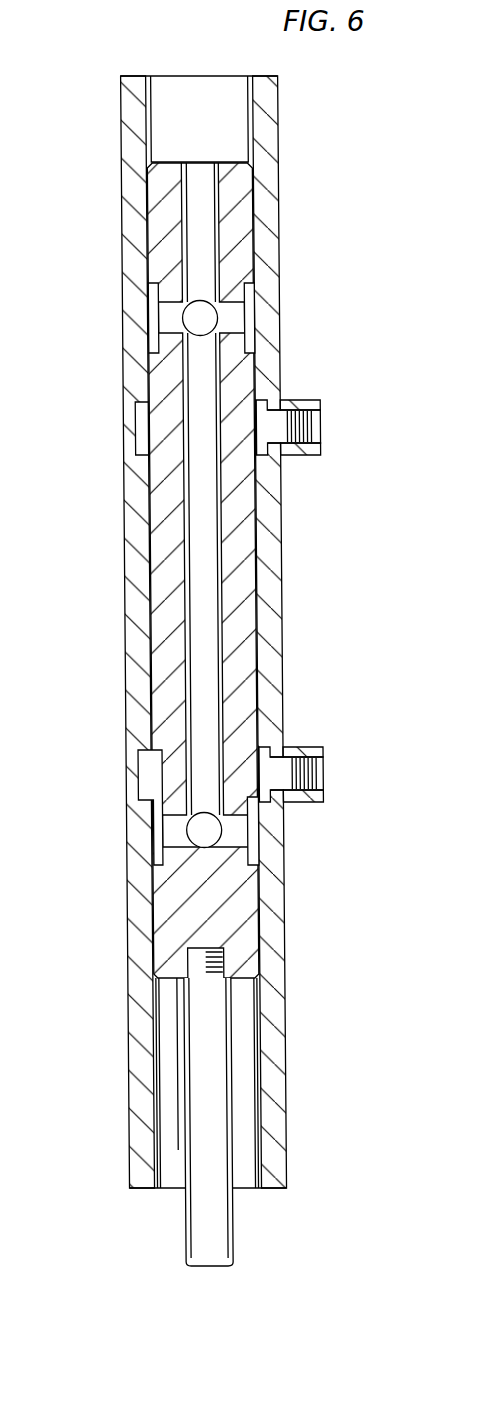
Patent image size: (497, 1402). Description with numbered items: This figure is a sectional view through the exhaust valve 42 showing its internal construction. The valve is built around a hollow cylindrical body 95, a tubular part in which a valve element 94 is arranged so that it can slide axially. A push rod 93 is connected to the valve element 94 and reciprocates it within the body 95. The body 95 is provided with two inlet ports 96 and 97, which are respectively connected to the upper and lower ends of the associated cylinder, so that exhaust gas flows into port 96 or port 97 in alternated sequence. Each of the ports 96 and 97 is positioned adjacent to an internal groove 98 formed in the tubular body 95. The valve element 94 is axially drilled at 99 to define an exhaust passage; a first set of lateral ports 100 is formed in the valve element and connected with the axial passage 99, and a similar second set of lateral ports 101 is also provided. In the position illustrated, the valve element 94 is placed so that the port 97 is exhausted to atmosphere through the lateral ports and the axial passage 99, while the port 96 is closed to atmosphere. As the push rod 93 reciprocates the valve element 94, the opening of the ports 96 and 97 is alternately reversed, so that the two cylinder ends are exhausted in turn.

The exhaust valve 42 is at (88, 495).
The push rod 93 is at (220, 1228).
The valve element 94 is at (238, 558).
The hollow cylindrical body 95 is at (273, 1035).
The inlet port 96 is at (304, 408).
The inlet port 97 is at (308, 755).
The internal groove 98 is at (140, 433).
The axial passage 99 is at (208, 200).
The first set of lateral ports 100 is at (162, 317).
The second set of lateral ports 101 is at (172, 835).